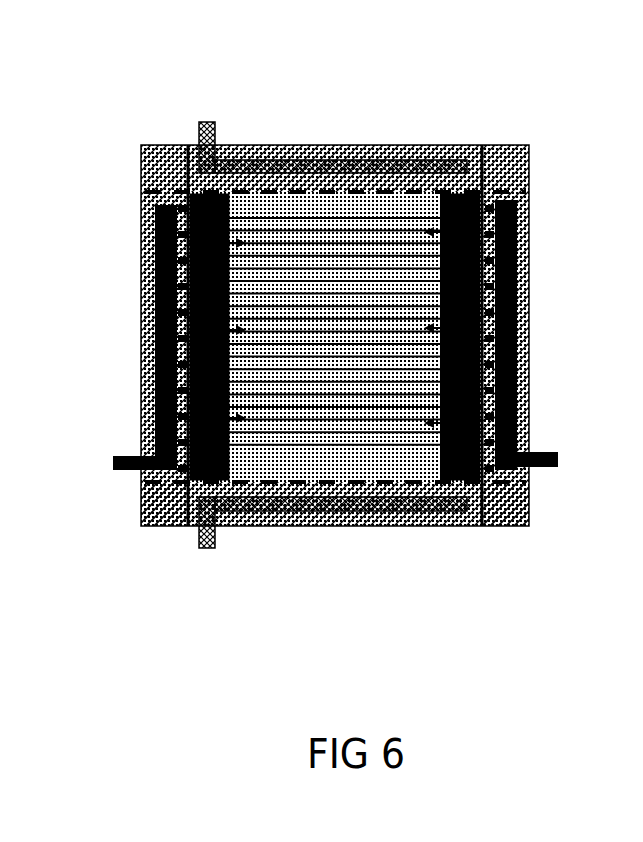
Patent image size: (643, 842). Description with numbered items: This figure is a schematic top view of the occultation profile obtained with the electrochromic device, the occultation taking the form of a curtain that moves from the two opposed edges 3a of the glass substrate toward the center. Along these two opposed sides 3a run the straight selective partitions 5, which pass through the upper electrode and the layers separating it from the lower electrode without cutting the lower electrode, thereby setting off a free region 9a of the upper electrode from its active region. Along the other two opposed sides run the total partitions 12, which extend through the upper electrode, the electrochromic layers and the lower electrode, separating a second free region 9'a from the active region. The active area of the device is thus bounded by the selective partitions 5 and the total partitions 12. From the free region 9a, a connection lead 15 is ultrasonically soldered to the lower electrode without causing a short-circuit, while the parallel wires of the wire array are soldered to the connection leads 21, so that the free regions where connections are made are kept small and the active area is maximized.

The selective partition 5 is at (527, 175).
The total partition 12 is at (170, 523).
The connection lead 15 is at (339, 165).
The free region 9a is at (272, 165).
The second free region 9'a is at (349, 337).
The opposed sides of the glass substrate 3a is at (140, 203).
The connection leads 21 is at (140, 403).